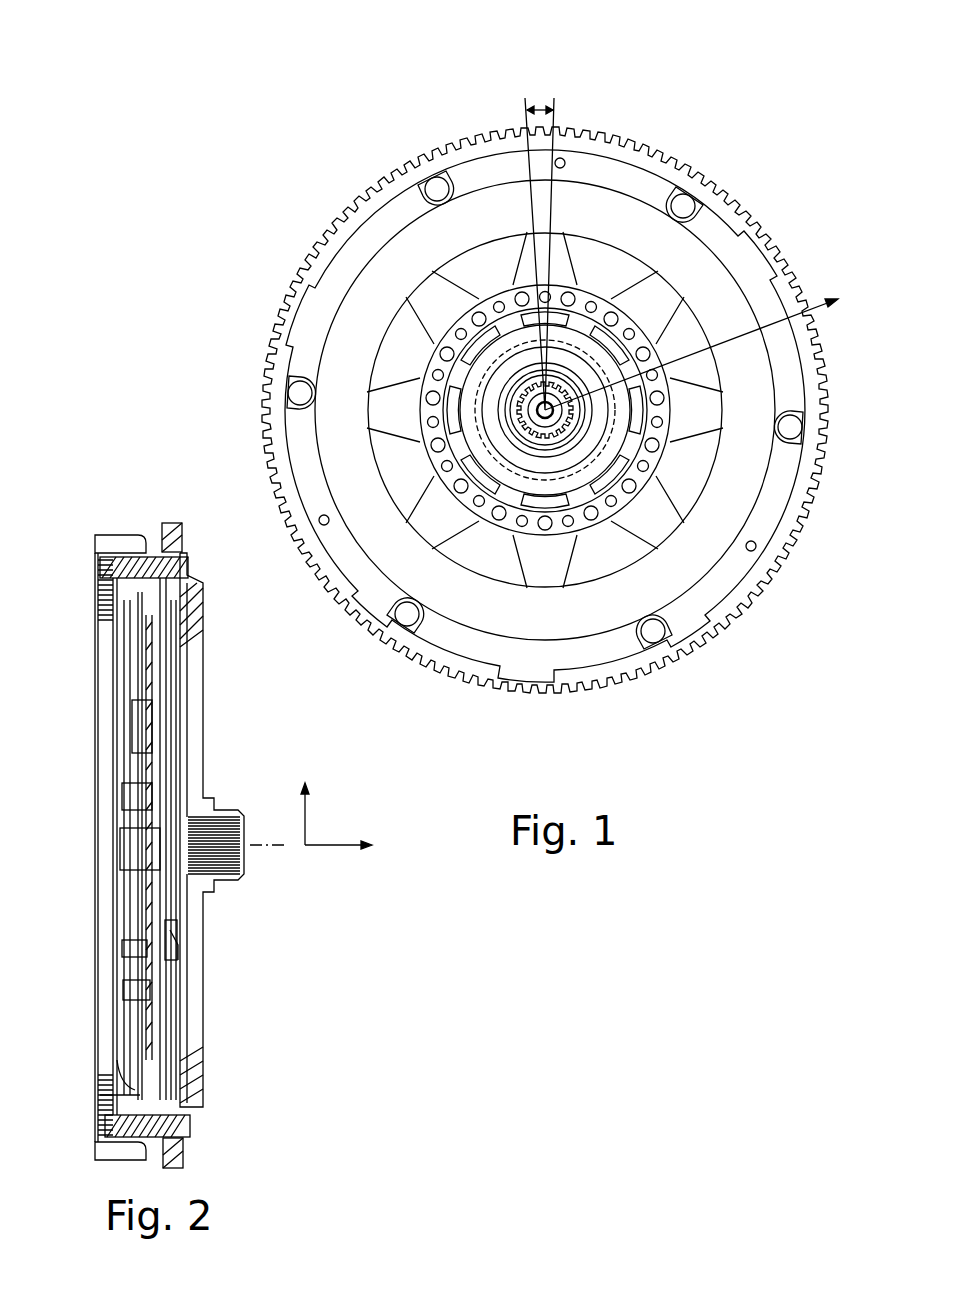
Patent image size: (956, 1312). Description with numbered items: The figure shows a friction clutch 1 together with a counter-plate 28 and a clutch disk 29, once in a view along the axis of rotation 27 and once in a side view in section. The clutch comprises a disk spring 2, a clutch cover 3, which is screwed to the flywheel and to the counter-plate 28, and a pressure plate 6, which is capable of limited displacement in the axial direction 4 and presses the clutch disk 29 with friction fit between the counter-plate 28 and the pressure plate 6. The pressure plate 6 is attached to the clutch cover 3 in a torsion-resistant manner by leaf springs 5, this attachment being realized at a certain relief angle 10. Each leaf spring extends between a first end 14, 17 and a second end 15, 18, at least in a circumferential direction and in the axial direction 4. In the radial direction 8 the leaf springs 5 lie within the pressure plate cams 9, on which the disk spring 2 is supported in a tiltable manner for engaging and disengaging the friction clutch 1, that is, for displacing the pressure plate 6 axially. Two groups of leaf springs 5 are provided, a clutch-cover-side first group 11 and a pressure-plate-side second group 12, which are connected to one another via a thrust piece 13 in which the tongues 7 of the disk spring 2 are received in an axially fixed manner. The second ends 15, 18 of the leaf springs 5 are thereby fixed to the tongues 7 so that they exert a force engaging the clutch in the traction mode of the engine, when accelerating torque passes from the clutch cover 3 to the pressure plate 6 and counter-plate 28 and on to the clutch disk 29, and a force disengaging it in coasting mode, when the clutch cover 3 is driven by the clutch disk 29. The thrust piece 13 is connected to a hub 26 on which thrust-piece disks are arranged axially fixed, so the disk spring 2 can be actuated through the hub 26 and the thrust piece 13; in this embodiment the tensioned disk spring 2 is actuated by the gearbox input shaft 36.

In FIG. 1, the friction clutch 1 is at (653, 121).
In FIG. 2, the disk spring 2 is at (130, 1012).
In FIG. 1, the clutch cover 3 is at (548, 690).
In FIG. 2, the clutch cover 3 is at (97, 612).
In FIG. 2, the axial direction 4 is at (338, 819).
In FIG. 2, the leaf springs 5 is at (157, 775).
In FIG. 2, the pressure plate 6 is at (115, 1100).
In FIG. 2, the tongues 7 is at (130, 990).
In FIG. 1, the radial direction 8 is at (800, 303).
In FIG. 2, the radial direction 8 is at (313, 812).
In FIG. 2, the pressure plate cams 9 is at (125, 1065).
In FIG. 1, the relief angle 10 is at (541, 100).
In FIG. 2, the first group 11 is at (130, 843).
In FIG. 2, the second group 12 is at (185, 938).
In FIG. 2, the thrust piece 13 is at (130, 890).
In FIG. 2, the first end 14 is at (128, 915).
In FIG. 2, the second end 15 is at (120, 787).
In FIG. 2, the first end 17 is at (180, 948).
In FIG. 2, the second end 18 is at (160, 745).
In FIG. 1, the hub 26 is at (560, 392).
In FIG. 2, the hub 26 is at (130, 812).
In FIG. 1, the axis of rotation 27 is at (560, 392).
In FIG. 2, the axis of rotation 27 is at (362, 850).
In FIG. 1, the counter-plate 28 is at (690, 545).
In FIG. 2, the counter-plate 28 is at (195, 625).
In FIG. 1, the clutch disk 29 is at (560, 465).
In FIG. 2, the clutch disk 29 is at (185, 680).
In FIG. 1, the gearbox input shaft 36 is at (525, 440).
In FIG. 2, the gearbox input shaft 36 is at (198, 808).